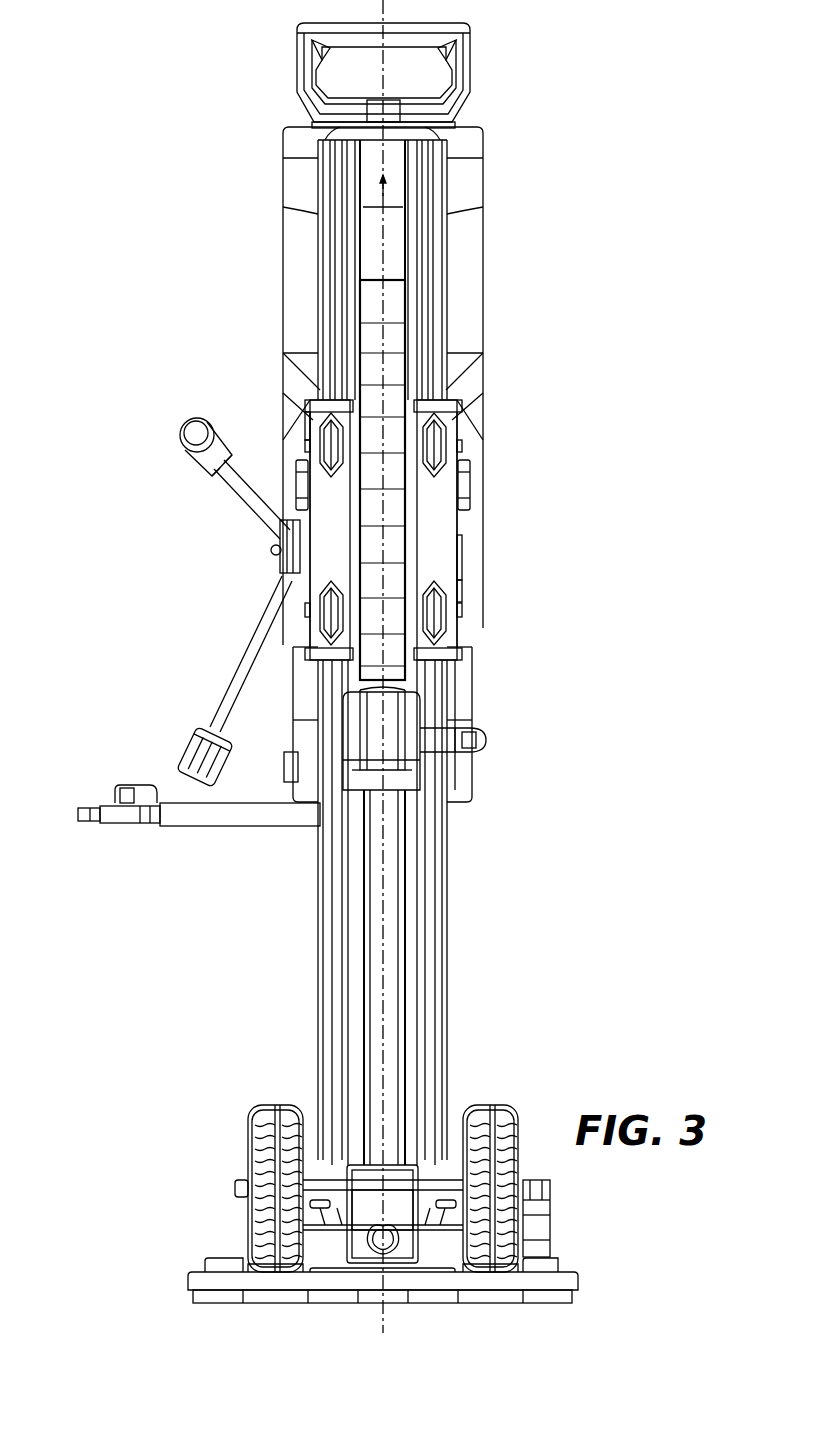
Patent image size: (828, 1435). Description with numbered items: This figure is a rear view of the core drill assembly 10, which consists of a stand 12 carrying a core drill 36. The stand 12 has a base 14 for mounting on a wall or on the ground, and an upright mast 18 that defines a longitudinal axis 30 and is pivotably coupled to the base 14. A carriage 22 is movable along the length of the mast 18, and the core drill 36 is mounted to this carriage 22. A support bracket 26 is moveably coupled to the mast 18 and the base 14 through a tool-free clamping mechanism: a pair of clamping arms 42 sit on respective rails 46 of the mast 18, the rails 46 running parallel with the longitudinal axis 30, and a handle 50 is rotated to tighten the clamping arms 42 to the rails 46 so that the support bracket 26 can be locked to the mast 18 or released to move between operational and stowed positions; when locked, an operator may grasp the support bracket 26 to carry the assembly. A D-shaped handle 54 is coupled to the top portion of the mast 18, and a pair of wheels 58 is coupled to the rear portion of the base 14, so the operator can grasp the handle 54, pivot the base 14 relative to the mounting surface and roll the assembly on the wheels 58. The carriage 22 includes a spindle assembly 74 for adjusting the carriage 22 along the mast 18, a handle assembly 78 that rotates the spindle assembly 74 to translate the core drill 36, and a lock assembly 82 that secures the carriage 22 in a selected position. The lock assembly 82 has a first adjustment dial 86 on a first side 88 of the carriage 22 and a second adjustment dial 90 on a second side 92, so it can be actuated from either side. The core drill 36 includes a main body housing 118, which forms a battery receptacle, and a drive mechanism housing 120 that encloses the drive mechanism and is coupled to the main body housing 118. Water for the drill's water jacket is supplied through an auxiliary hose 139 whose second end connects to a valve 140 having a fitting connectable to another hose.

The core drill assembly 10 is at (610, 172).
The stand 12 is at (574, 624).
The base 14 is at (250, 1270).
The mast 18 is at (410, 190).
The carriage 22 is at (433, 515).
The support bracket 26 is at (398, 903).
The longitudinal axis 30 is at (345, 77).
The core drill 36 is at (462, 310).
The clamping arms 42 is at (350, 770).
The rails 46 is at (355, 265).
The handle 50 is at (487, 738).
The handle 54 is at (440, 32).
The wheels 58 is at (258, 1108).
The spindle assembly 74 is at (272, 560).
The handle assembly 78 is at (197, 420).
The lock assembly 82 is at (514, 497).
The first adjustment dial 86 is at (300, 480).
The first side 88 is at (315, 397).
The second adjustment dial 90 is at (468, 485).
The second side 92 is at (457, 573).
The main body housing 118 is at (483, 390).
The drive mechanism housing 120 is at (460, 677).
The auxiliary hose 139 is at (225, 815).
The valve 140 is at (125, 785).